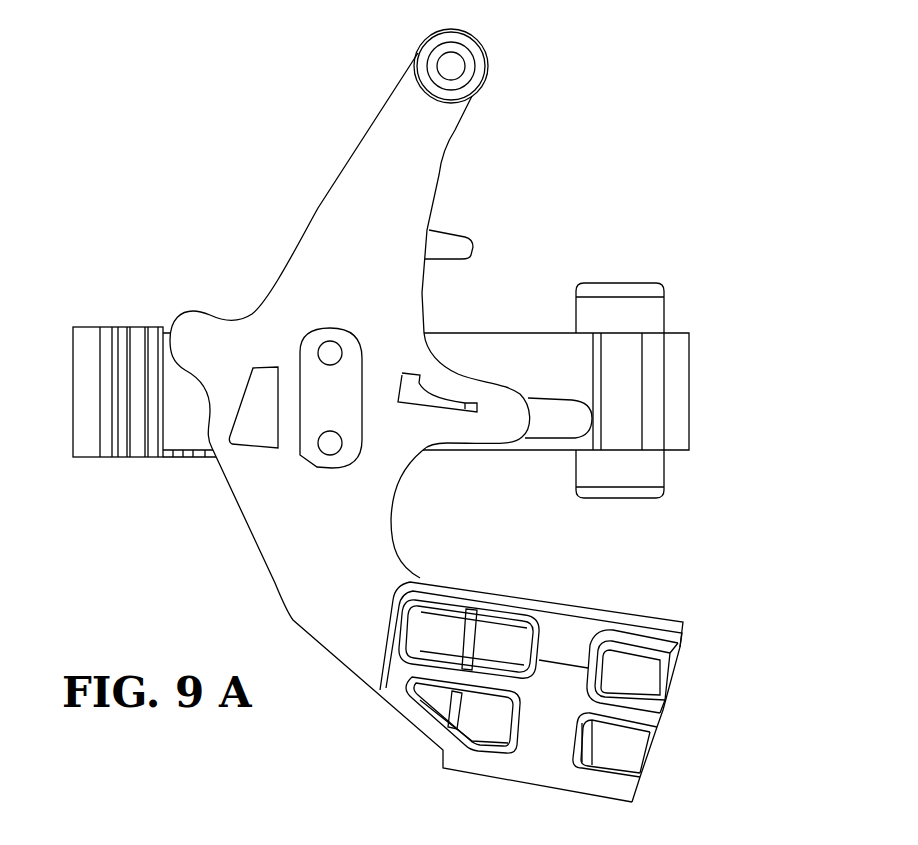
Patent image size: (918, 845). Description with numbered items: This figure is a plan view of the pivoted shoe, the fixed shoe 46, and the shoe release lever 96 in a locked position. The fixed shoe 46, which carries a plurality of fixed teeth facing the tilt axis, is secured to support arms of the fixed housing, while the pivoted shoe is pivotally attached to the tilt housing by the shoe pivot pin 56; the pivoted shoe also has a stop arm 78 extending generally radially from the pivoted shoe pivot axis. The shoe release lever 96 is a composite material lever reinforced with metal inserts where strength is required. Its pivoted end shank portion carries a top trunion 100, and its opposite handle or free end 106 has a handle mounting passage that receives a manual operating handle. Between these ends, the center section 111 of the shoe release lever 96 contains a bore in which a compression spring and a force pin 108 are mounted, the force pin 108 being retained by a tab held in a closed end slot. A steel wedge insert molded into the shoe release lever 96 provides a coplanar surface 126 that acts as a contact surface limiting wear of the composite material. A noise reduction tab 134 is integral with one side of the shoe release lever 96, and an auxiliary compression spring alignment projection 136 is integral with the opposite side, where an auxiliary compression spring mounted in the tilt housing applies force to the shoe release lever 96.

The fixed shoe 46 is at (105, 327).
The shoe pivot pin 56 is at (665, 313).
The stop arm 78 is at (592, 372).
The shoe release lever 96 is at (276, 585).
The top trunion 100 is at (418, 52).
The free end 106 is at (676, 690).
The force pin 108 is at (580, 440).
The center section 111 is at (295, 470).
The coplanar surface 126 is at (313, 345).
The noise reduction tab 134 is at (190, 325).
The auxiliary compression spring alignment projection 136 is at (470, 238).